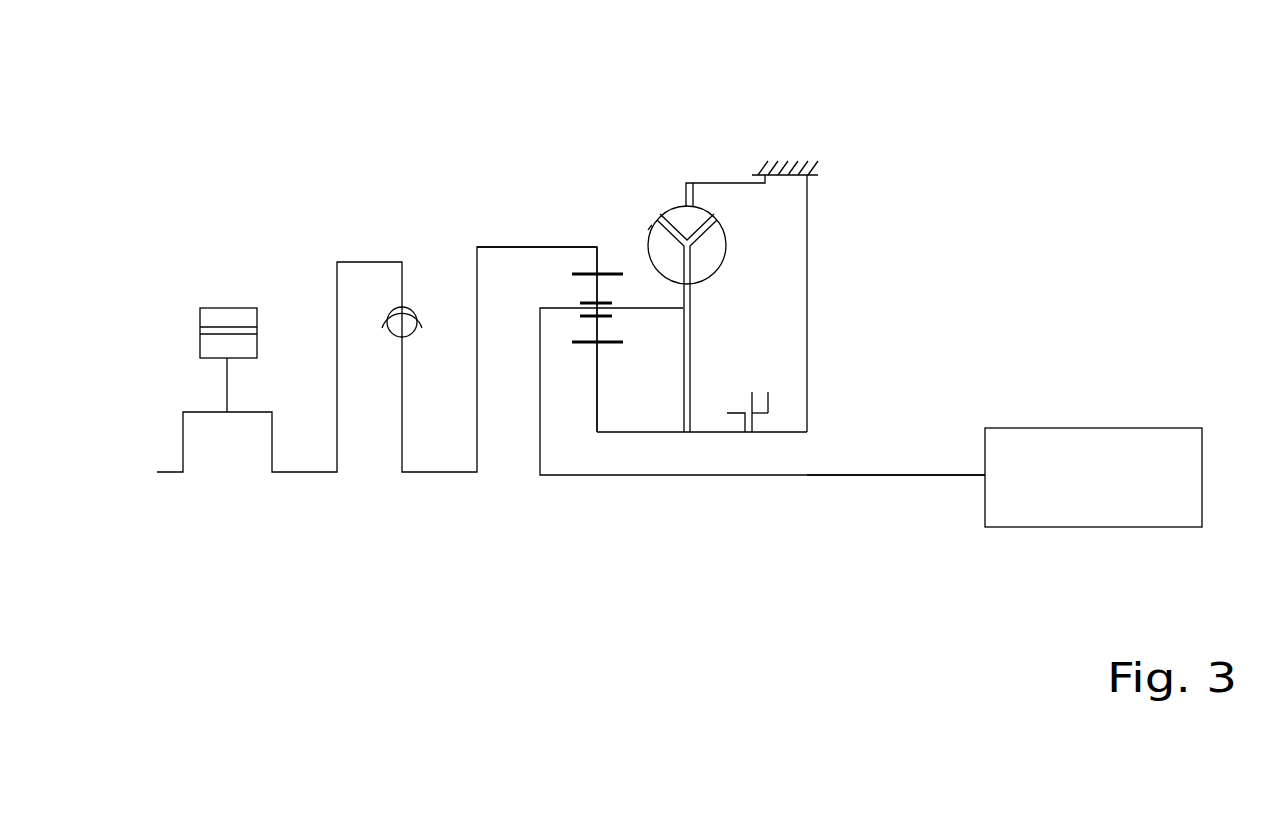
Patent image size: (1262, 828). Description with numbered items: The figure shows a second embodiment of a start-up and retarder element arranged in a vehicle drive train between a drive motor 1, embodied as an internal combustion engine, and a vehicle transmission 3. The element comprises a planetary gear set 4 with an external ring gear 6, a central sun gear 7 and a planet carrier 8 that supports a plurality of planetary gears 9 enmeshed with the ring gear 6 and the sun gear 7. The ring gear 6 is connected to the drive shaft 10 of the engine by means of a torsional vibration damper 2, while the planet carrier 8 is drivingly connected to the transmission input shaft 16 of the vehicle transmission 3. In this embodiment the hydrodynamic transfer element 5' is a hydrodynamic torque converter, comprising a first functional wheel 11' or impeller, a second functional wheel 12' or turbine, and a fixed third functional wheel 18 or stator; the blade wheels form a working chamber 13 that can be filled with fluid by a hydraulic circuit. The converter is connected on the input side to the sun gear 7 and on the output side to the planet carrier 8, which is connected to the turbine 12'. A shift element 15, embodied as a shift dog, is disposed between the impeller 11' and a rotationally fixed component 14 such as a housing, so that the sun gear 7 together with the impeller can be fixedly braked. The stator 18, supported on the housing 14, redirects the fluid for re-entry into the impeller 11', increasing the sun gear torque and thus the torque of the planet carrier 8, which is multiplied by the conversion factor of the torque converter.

The drive motor 1 is at (222, 360).
The drive shaft 10 is at (302, 474).
The torsional vibration damper 2 is at (392, 337).
The planetary gear set 4 is at (472, 84).
The ring gear 6 is at (597, 263).
The planet carrier 8 is at (563, 312).
The sun gear 7 is at (600, 382).
The planetary gears 9 is at (598, 327).
The hydrodynamic transfer element 5' is at (687, 161).
The working chamber 13 is at (662, 218).
The first functional wheel 11' is at (754, 235).
The second functional wheel 12' is at (583, 137).
The third functional wheel 18 is at (697, 204).
The rotationally fixed component 14 is at (805, 163).
The shift element 15 is at (757, 433).
The transmission input shaft 16 is at (823, 477).
The vehicle transmission 3 is at (1045, 527).